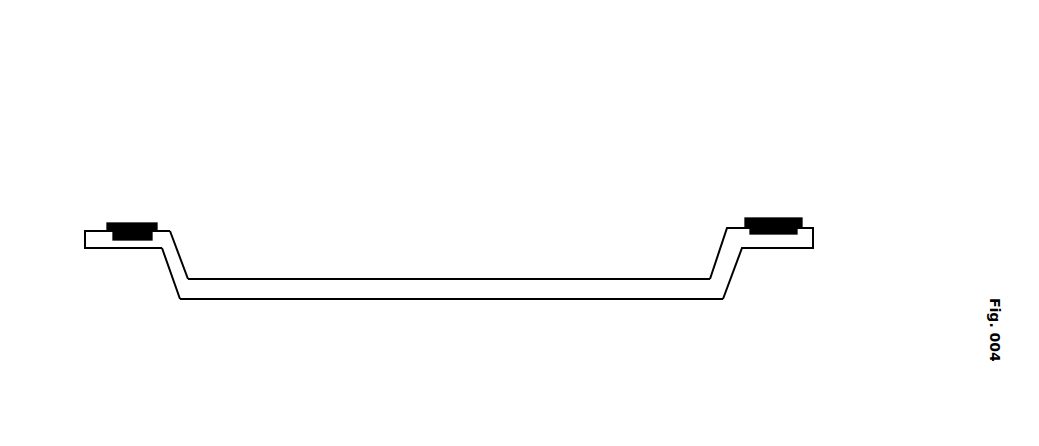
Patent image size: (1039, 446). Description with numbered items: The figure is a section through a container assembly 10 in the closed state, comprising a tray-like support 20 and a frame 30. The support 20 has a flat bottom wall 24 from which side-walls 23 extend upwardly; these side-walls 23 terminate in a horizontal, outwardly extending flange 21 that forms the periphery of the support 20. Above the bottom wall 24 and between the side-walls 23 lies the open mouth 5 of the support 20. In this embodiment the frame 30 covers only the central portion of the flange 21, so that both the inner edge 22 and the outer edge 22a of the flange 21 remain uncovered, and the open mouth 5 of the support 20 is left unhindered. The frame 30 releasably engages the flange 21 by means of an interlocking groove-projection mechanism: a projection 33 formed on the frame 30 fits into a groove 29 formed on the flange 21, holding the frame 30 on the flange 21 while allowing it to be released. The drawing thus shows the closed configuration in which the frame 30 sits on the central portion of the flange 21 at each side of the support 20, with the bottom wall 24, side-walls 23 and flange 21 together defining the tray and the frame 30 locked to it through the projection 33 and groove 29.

The assembly 10 is at (370, 166).
The open mouth 5 is at (470, 252).
The tray-like support 20 is at (533, 299).
The flange 21 is at (763, 248).
The inner edge of flange 22 is at (167, 230).
The outer edge of flange 22a is at (92, 229).
The side-walls 23 is at (174, 279).
The flat bottom wall 24 is at (315, 299).
The groove 29 is at (798, 234).
The frame 30 is at (128, 223).
The projection 33 is at (132, 240).